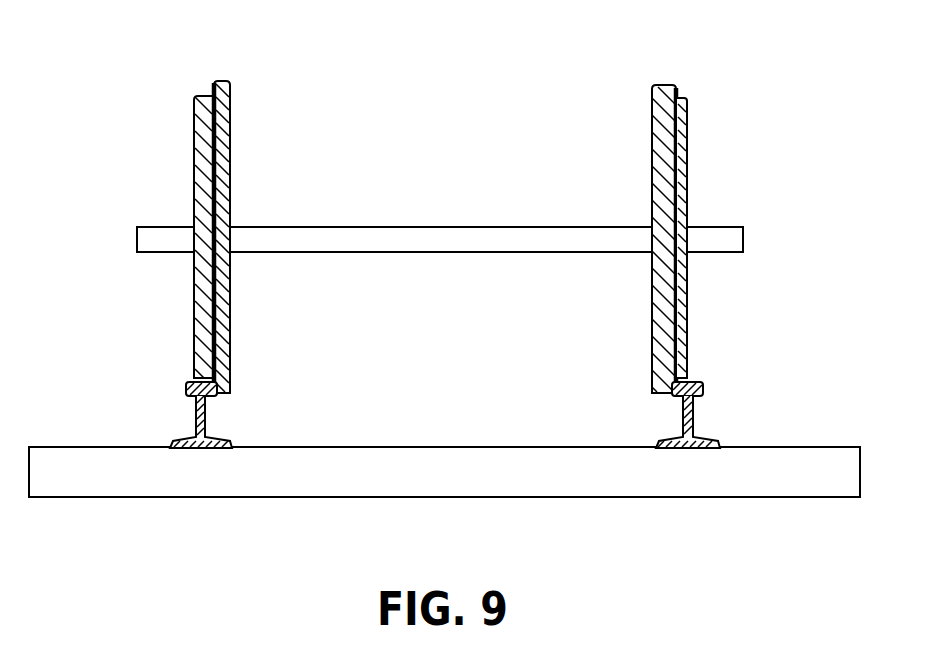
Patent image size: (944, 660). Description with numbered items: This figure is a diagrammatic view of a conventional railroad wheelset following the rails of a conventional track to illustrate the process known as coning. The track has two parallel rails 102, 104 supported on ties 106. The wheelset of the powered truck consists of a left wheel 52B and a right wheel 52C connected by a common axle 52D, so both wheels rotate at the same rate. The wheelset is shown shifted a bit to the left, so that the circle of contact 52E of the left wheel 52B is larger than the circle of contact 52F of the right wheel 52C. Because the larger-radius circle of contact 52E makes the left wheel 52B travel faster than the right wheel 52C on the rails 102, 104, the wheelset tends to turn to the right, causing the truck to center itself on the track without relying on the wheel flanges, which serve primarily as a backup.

The left wheel 52B is at (195, 330).
The right wheel 52C is at (687, 322).
The common axle 52D is at (445, 235).
The circle of contact of the left wheel 52E is at (214, 92).
The circle of contact of the right wheel 52F is at (677, 97).
The rail 102 is at (187, 385).
The rail 104 is at (703, 387).
The ties 106 is at (440, 465).